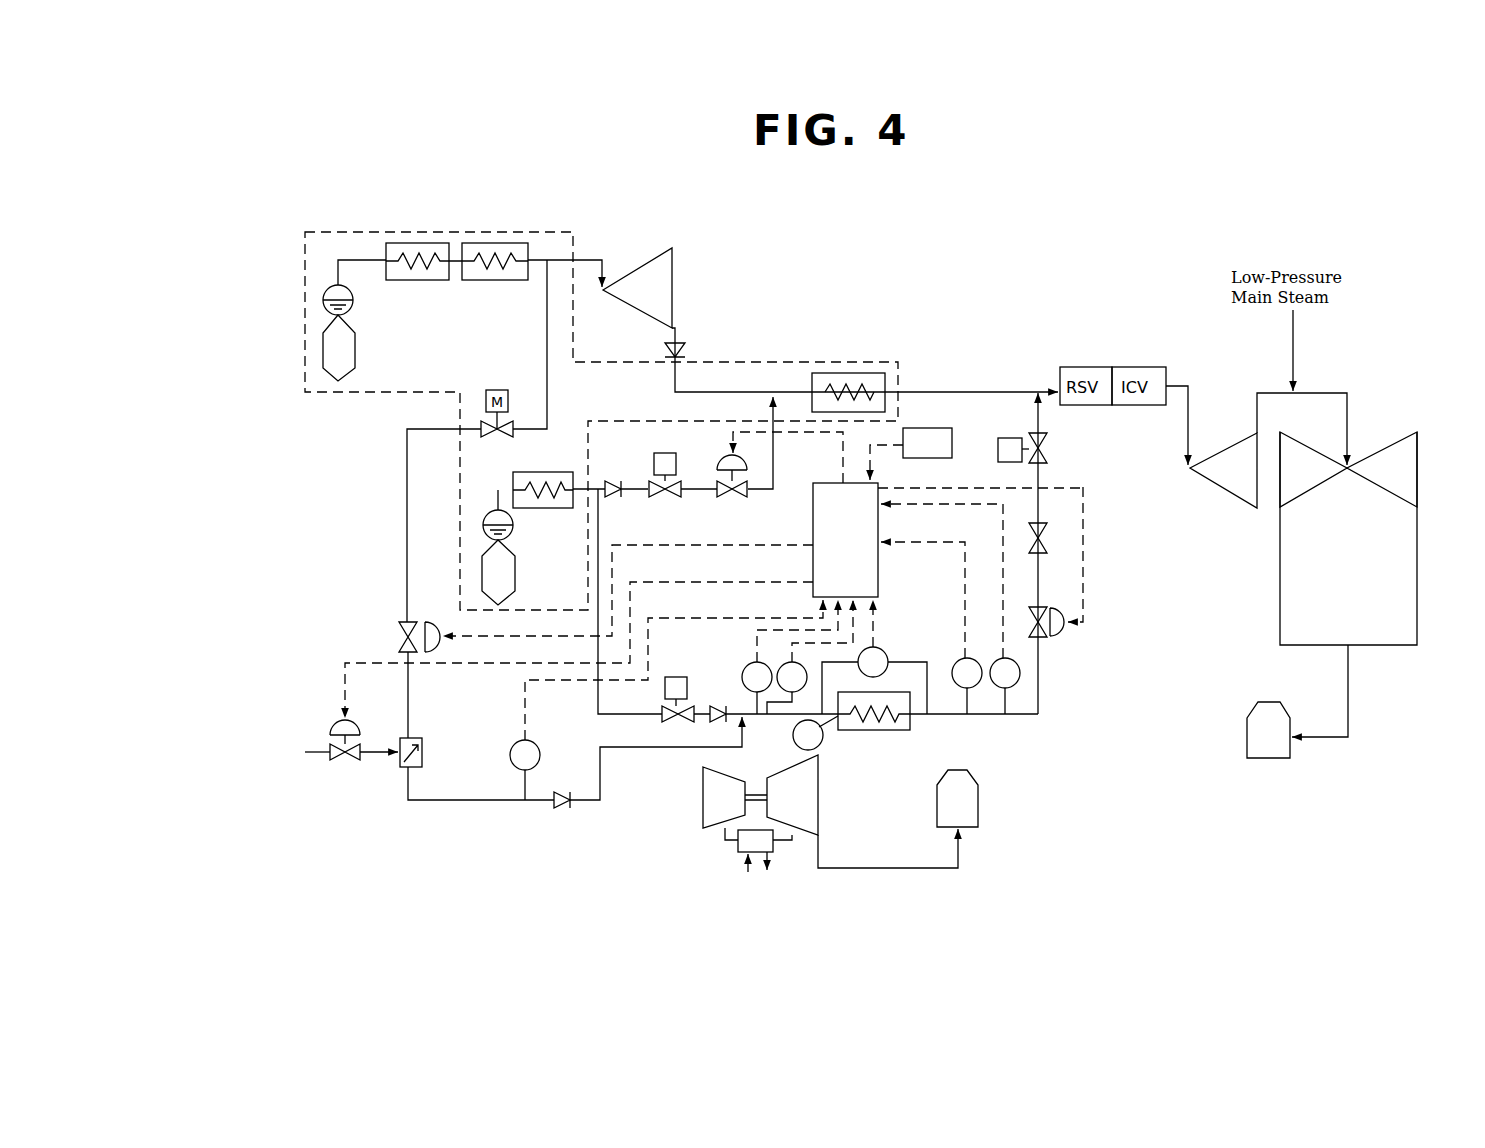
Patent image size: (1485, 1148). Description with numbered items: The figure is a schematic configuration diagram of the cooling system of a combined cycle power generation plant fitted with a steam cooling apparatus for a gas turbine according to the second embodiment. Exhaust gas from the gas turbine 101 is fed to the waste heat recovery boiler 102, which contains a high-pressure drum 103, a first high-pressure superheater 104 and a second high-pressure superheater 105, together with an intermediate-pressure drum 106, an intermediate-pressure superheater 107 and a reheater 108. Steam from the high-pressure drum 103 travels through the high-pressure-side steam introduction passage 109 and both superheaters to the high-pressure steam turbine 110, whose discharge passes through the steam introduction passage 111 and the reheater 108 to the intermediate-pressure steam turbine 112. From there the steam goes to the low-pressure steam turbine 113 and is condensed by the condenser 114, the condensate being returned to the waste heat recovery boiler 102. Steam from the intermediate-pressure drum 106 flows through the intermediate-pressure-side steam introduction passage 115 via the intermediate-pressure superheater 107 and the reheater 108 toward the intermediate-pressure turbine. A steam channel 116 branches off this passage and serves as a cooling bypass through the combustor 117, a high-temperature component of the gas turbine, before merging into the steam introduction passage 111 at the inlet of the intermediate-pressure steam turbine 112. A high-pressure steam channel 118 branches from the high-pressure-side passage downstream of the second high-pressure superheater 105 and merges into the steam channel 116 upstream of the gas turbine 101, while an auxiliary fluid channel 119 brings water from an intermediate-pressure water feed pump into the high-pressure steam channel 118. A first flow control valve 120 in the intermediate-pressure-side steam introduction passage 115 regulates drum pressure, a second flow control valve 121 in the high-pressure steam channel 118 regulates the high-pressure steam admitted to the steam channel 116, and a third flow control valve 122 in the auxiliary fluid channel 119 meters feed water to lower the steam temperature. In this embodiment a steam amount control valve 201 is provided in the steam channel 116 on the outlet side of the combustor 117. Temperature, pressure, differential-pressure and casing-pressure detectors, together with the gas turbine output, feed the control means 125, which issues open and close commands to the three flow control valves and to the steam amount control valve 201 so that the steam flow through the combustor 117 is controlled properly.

The gas turbine 101 is at (838, 777).
The waste heat recovery boiler 102 is at (523, 232).
The high-pressure drum 103 is at (355, 357).
The first high-pressure superheater 104 is at (452, 270).
The second high-pressure superheater 105 is at (497, 280).
The intermediate-pressure drum 106 is at (482, 578).
The intermediate-pressure superheater 107 is at (513, 480).
The reheater 108 is at (850, 372).
The high-pressure-side steam introduction passage 109 is at (588, 255).
The high-pressure steam turbine 110 is at (672, 268).
The steam introduction passage 111 is at (945, 388).
The intermediate-pressure steam turbine 112 is at (1225, 450).
The low-pressure steam turbine 113 is at (1393, 440).
The condenser 114 is at (1377, 608).
The intermediate-pressure-side steam introduction passage 115 is at (782, 462).
The steam channel 116 is at (953, 709).
The combustor 117 is at (912, 720).
The high-pressure steam channel 118 is at (560, 808).
The auxiliary fluid channel 119 is at (317, 753).
The first flow control valve 120 is at (713, 470).
The second flow control valve 121 is at (400, 640).
The third flow control valve 122 is at (355, 762).
The control means 125 is at (813, 508).
The steam amount control valve 201 is at (1045, 610).